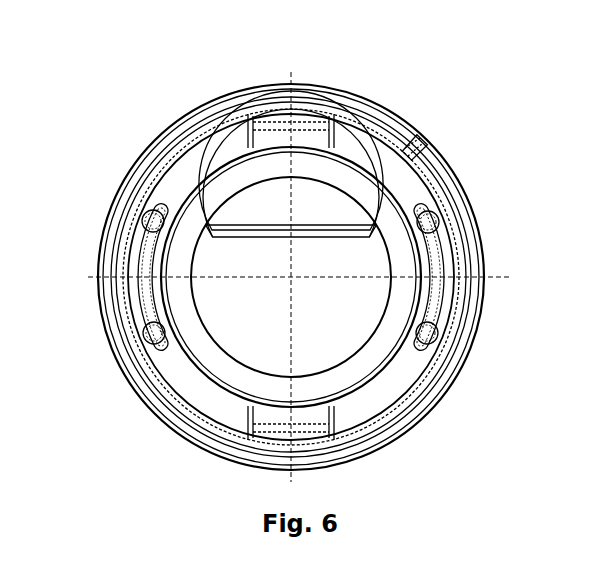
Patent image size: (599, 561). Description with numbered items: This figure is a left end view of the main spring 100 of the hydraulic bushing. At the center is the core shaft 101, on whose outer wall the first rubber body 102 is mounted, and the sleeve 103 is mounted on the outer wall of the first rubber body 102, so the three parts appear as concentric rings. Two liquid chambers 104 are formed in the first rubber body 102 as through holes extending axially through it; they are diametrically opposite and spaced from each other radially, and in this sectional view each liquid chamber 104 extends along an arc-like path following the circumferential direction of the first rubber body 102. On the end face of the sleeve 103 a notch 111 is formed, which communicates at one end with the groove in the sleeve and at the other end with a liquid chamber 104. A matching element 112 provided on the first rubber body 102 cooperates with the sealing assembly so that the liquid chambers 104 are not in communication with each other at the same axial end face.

The main spring 100 is at (145, 127).
The core shaft 101 is at (348, 260).
The first rubber body 102 is at (226, 144).
The sleeve 103 is at (338, 100).
The liquid chamber 104 is at (133, 253).
The notch 111 is at (408, 124).
The matching element 112 is at (280, 137).